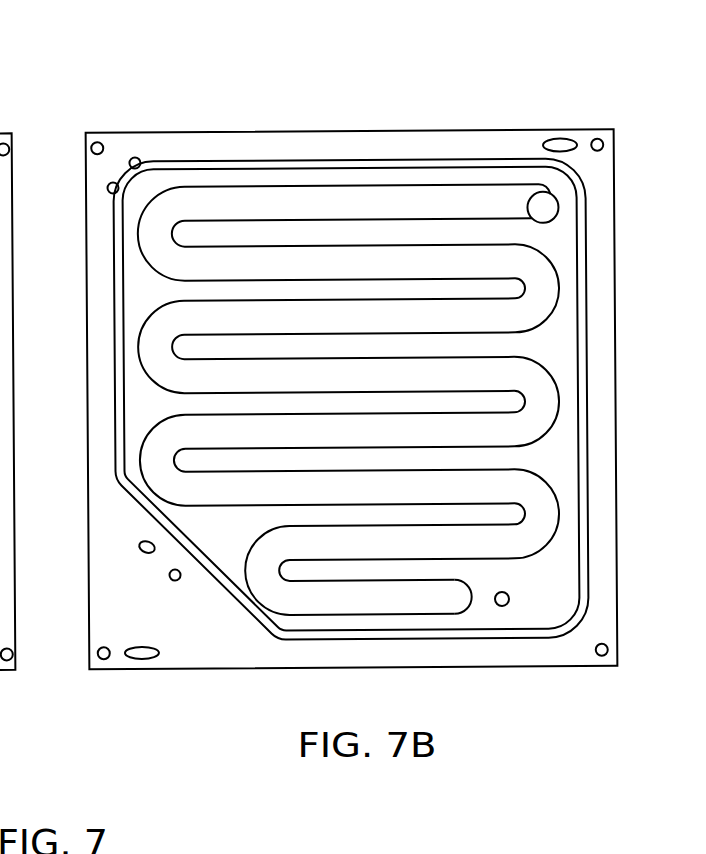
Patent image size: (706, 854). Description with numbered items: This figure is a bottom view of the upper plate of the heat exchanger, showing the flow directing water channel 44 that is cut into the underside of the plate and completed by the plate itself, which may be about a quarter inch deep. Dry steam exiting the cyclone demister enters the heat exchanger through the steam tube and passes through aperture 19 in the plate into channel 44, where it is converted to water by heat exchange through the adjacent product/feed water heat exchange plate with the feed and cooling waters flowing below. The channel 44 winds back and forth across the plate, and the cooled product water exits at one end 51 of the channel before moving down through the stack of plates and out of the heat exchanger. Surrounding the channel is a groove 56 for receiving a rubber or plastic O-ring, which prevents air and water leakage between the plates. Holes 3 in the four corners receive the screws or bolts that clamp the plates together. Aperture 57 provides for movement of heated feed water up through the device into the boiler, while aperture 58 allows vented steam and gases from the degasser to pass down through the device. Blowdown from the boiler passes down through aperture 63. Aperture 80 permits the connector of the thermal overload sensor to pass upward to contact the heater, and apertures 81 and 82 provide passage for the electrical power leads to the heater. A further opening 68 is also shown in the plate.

The holes 3 is at (97, 141).
The aperture 19 is at (546, 214).
The water flow channel 44 is at (302, 212).
The one end of water channel 51 is at (447, 597).
The groove 56 is at (583, 383).
The aperture 57 is at (134, 156).
The aperture 58 is at (108, 190).
The aperture 63 is at (508, 599).
The alignment hole 68 is at (178, 582).
The aperture 80 is at (138, 547).
The aperture 81 is at (559, 141).
The aperture 82 is at (142, 662).